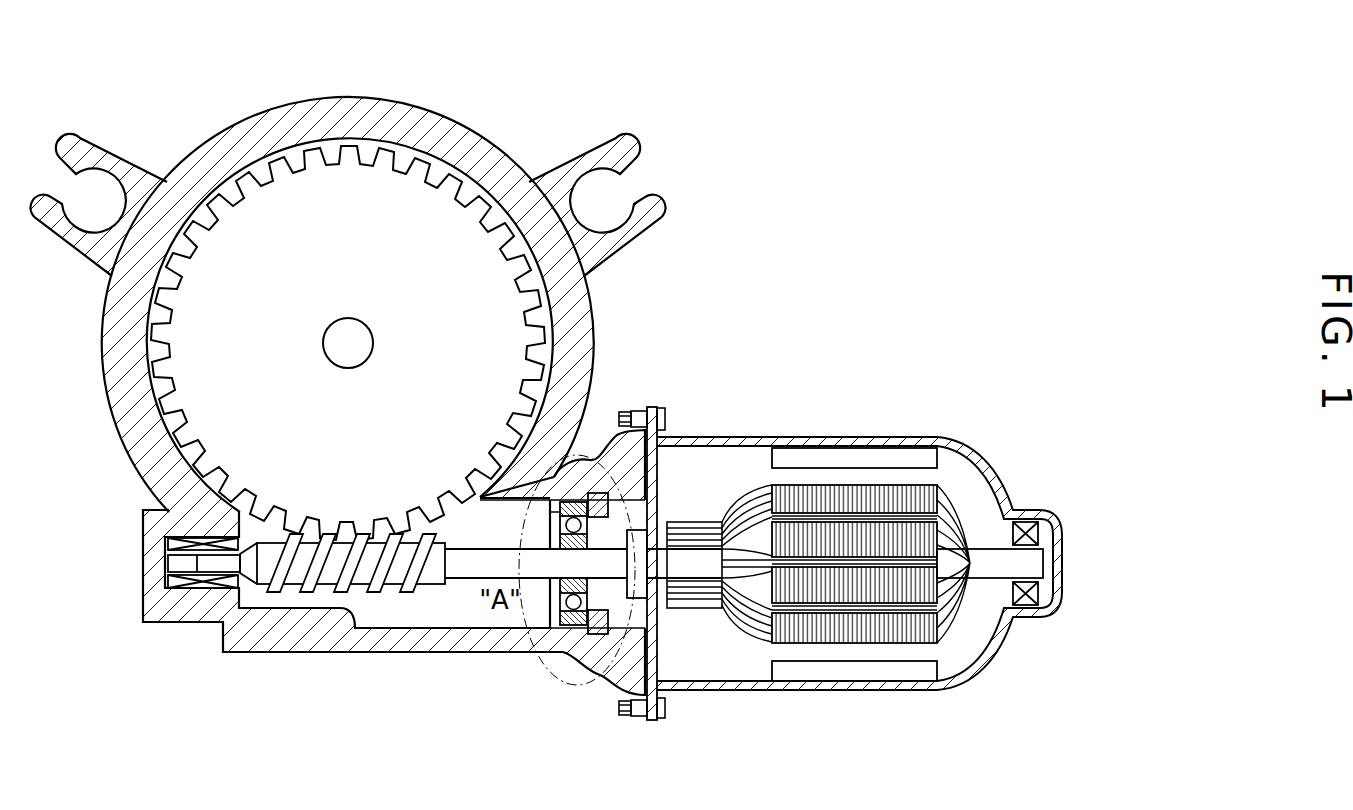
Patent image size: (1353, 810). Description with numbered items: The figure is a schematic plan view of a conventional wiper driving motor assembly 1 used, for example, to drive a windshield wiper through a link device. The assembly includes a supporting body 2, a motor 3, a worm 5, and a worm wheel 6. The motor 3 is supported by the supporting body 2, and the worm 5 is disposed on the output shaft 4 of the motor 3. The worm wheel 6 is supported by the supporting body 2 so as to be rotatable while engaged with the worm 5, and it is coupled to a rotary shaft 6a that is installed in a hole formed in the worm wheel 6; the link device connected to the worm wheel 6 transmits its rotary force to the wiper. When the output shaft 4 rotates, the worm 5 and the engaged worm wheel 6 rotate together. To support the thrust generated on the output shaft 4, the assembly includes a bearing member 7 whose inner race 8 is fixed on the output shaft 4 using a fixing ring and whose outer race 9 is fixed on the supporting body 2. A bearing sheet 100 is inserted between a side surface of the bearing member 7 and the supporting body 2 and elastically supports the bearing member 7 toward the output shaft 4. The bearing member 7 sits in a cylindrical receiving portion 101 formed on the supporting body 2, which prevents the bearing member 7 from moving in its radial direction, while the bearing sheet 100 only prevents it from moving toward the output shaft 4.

The wiper driving motor assembly 1 is at (822, 374).
The supporting body 2 is at (402, 640).
The motor 3 is at (898, 434).
The output shaft 4 is at (466, 567).
The worm 5 is at (310, 600).
The worm wheel 6 is at (345, 193).
The rotary shaft 6a is at (349, 340).
The bearing member 7 is at (556, 628).
The inner race 8 is at (548, 540).
The outer race 9 is at (527, 505).
The bearing sheet 100 is at (650, 510).
The receiving portion 101 is at (592, 645).